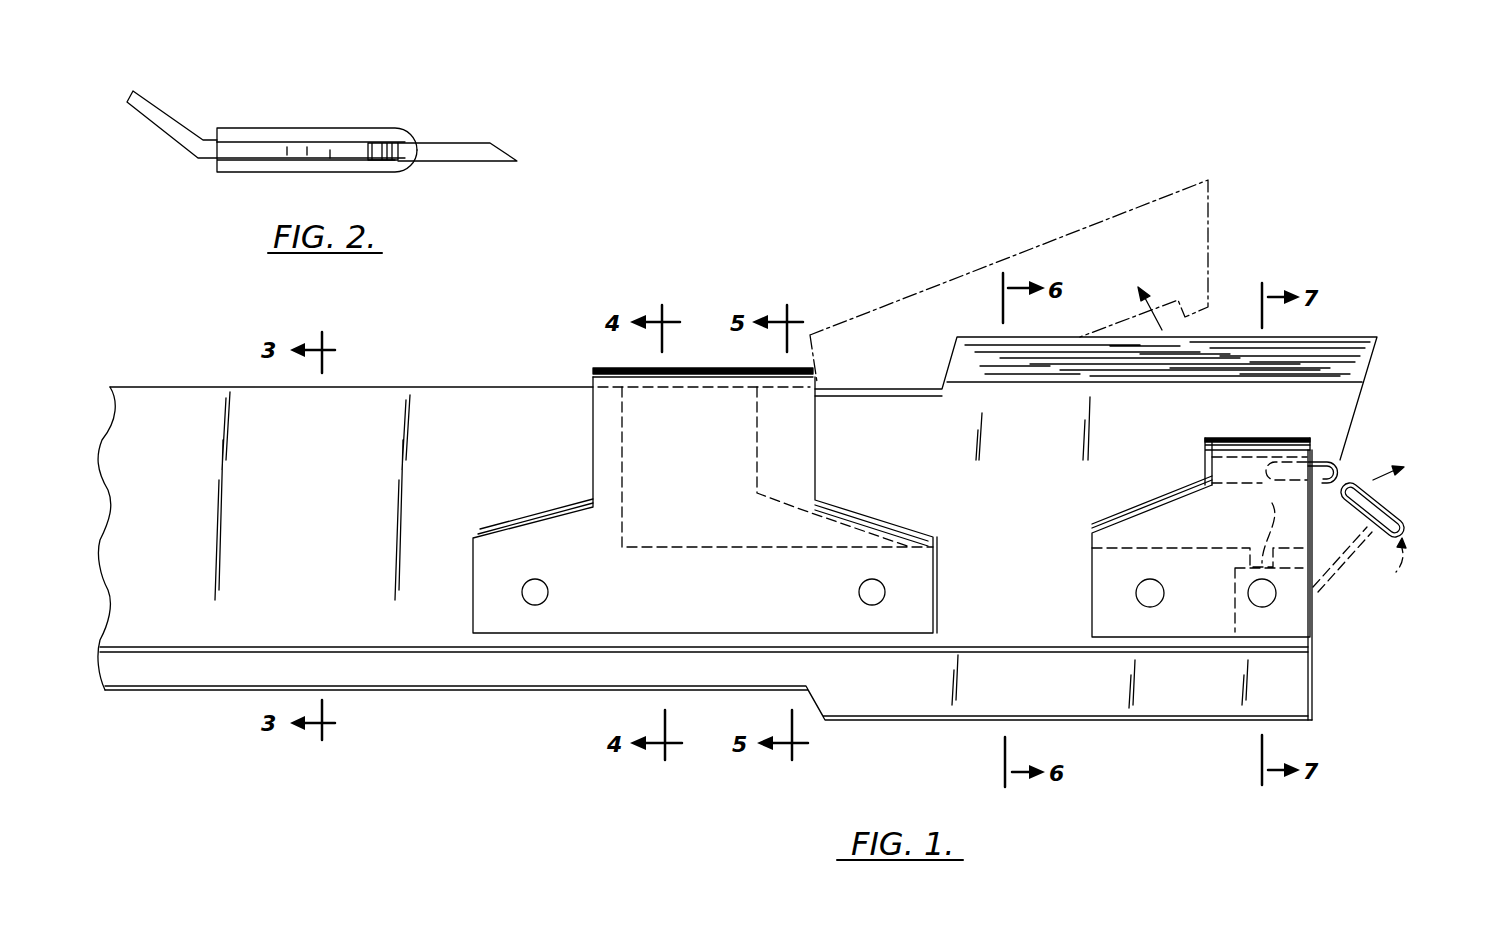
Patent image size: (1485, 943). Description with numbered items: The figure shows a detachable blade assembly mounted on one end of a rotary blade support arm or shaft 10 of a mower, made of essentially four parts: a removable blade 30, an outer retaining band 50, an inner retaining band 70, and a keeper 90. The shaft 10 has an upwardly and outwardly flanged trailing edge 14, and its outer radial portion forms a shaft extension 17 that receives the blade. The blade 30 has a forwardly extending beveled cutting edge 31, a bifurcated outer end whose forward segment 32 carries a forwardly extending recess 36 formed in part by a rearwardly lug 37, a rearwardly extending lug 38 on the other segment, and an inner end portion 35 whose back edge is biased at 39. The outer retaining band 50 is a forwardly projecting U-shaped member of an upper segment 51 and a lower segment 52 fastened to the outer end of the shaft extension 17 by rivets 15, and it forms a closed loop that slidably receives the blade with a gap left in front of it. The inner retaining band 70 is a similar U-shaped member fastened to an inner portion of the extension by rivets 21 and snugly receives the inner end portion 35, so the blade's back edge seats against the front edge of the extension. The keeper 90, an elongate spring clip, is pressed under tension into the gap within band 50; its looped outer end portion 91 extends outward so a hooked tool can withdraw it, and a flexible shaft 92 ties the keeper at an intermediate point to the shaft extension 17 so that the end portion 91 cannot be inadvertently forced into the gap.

In FIG. 1, the rotary blade support arm or shaft 10 is at (450, 405).
In FIG. 2, the upwardly and outwardly flanged trailing edge 14 is at (167, 125).
In FIG. 1, the upwardly and outwardly flanged trailing edge 14 is at (250, 670).
In FIG. 1, the rivets 15 is at (1150, 585).
In FIG. 1, the shaft extension 17 is at (1015, 604).
In FIG. 1, the rivets 21 is at (545, 598).
In FIG. 2, the removable blade 30 is at (447, 135).
In FIG. 1, the removable blade 30 is at (1218, 315).
In FIG. 2, the beveled cutting edge 31 is at (490, 151).
In FIG. 1, the beveled cutting edge 31 is at (1342, 353).
In FIG. 1, the segment 32 is at (1327, 398).
In FIG. 1, the inner end portion 35 is at (890, 446).
In FIG. 1, the forwardly extending recess 36 is at (1265, 445).
In FIG. 1, the rearwardly lug 37 is at (1325, 447).
In FIG. 1, the rearwardly extending lug 38 is at (1259, 527).
In FIG. 1, the bias of back edge 39 is at (800, 510).
In FIG. 2, the outer retaining band 50 is at (345, 112).
In FIG. 1, the outer retaining band 50 is at (1190, 486).
In FIG. 2, the upper segment 51 is at (268, 126).
In FIG. 2, the lower segment 52 is at (293, 168).
In FIG. 1, the inner retaining band 70 is at (578, 453).
In FIG. 1, the keeper 90 is at (1359, 529).
In FIG. 2, the outer end portion 91 is at (383, 150).
In FIG. 1, the outer end portion 91 is at (1338, 468).
In FIG. 2, the flexible shaft 92 is at (340, 150).